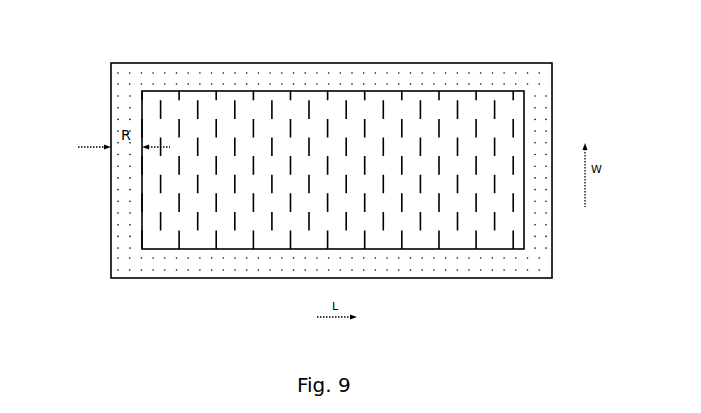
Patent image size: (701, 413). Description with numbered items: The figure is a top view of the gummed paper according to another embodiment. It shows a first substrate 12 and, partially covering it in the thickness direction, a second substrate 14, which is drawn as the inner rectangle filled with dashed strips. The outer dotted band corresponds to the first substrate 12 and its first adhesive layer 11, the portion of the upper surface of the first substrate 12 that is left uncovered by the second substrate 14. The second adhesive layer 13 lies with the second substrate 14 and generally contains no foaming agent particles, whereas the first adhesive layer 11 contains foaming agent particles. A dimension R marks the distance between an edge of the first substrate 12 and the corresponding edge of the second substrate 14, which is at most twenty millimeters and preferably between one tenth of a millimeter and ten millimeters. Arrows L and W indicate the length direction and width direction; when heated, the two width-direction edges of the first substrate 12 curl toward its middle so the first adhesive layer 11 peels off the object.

The first adhesive layer 11 is at (535, 265).
The first substrate 12 is at (371, 180).
The second adhesive layer 13 is at (172, 120).
The second substrate 14 is at (280, 158).